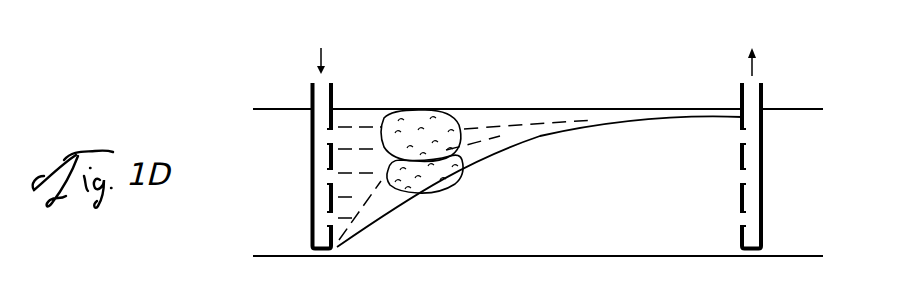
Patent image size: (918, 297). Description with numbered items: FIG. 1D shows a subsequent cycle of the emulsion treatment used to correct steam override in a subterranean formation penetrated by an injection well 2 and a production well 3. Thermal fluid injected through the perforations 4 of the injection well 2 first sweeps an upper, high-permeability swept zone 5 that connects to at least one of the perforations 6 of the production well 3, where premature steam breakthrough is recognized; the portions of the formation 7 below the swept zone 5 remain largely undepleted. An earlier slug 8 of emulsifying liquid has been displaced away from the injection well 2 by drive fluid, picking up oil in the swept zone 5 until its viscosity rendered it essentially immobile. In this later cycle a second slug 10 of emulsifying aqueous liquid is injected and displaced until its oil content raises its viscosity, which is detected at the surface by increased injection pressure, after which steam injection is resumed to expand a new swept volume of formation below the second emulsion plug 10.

The injection well 2 is at (310, 97).
The production well 3 is at (740, 95).
The perforations 4 is at (330, 177).
The swept zone 5 is at (357, 122).
The perforations 6 is at (744, 176).
The portions of the formation below swept zone 7 is at (538, 182).
The slug of emulsifying liquid 8 is at (422, 116).
The second slug 10 is at (424, 172).